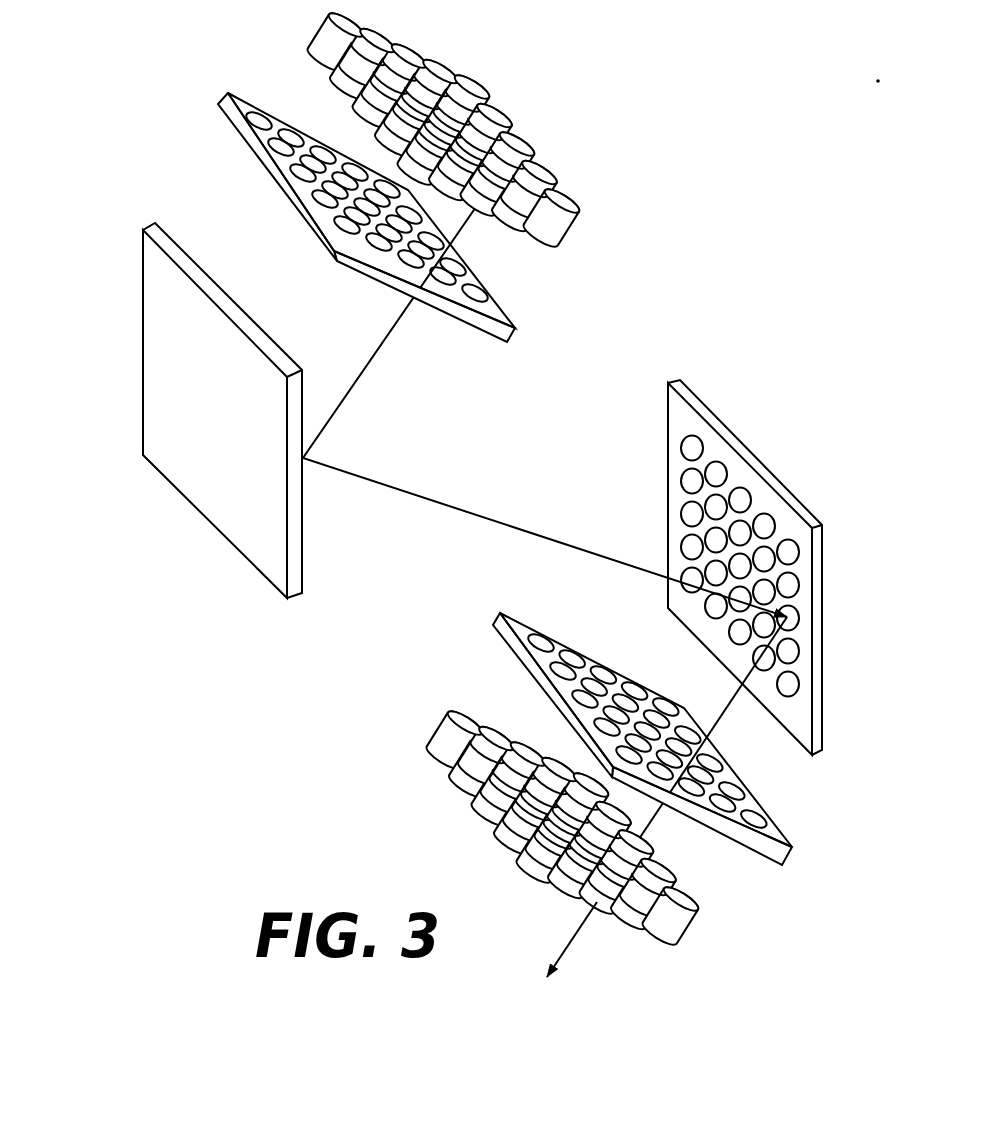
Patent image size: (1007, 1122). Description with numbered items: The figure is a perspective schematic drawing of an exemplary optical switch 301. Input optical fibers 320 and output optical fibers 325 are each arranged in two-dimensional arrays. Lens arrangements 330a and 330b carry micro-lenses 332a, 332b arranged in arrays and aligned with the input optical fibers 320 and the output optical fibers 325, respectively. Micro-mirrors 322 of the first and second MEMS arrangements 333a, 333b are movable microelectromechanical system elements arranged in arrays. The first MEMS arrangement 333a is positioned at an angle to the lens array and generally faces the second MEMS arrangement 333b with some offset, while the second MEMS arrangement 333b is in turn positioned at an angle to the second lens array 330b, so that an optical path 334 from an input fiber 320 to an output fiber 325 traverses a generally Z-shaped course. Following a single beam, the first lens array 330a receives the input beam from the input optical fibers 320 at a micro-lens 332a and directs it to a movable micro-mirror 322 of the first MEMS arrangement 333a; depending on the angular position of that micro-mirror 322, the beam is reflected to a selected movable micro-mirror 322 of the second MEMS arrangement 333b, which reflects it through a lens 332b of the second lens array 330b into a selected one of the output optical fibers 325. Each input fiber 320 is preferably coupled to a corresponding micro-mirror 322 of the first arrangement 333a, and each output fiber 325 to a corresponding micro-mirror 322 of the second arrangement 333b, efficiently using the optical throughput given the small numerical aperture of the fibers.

The optical switch 301 is at (677, 300).
The input optical fibers 320 is at (583, 217).
The micro-mirrors 322 is at (676, 434).
The output optical fibers 325 is at (432, 770).
The first lens array 330a is at (307, 177).
The second lens array 330b is at (688, 725).
The micro-lenses of first lens array 332a is at (266, 116).
The micro-lenses of second lens array 332b is at (582, 661).
The first MEMS arrangement 333a is at (138, 383).
The second MEMS arrangement 333b is at (742, 564).
The optical path 334 is at (505, 442).